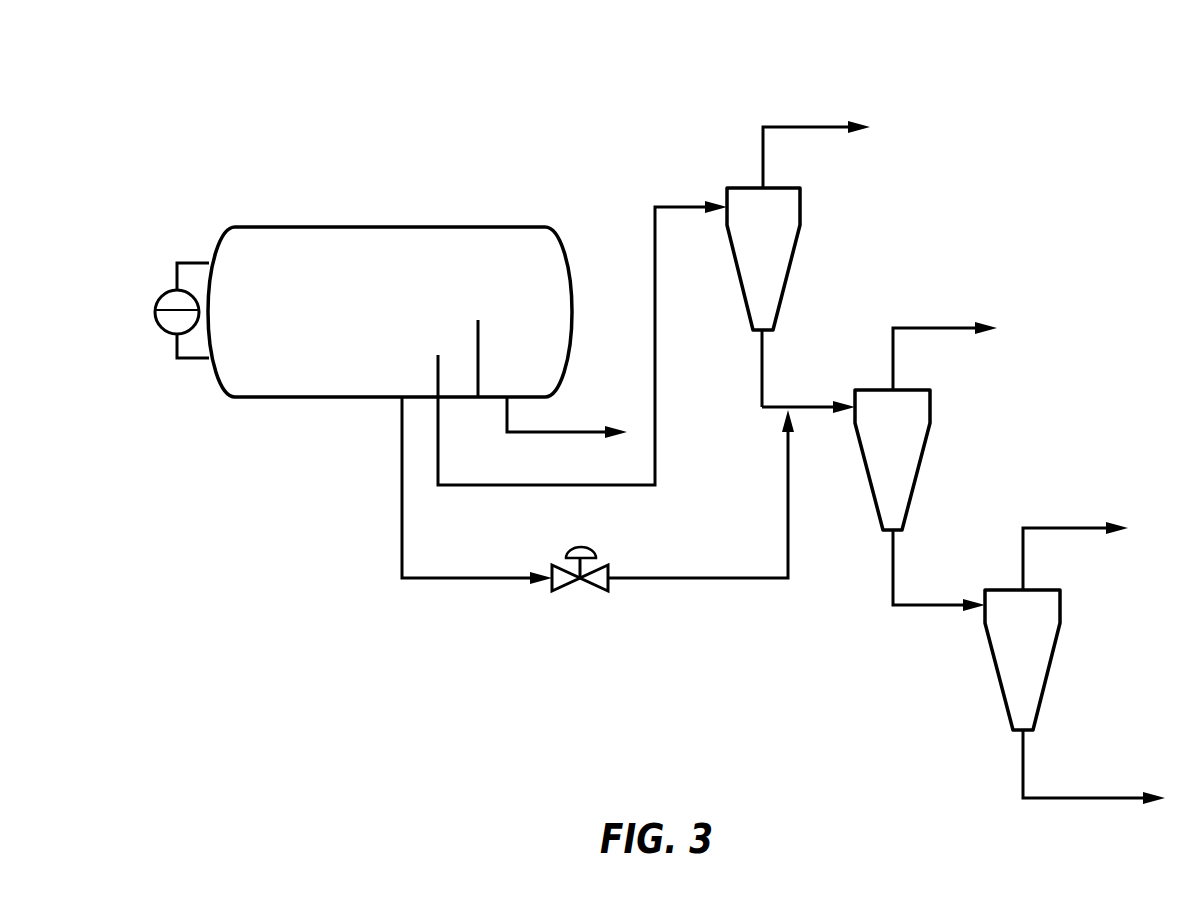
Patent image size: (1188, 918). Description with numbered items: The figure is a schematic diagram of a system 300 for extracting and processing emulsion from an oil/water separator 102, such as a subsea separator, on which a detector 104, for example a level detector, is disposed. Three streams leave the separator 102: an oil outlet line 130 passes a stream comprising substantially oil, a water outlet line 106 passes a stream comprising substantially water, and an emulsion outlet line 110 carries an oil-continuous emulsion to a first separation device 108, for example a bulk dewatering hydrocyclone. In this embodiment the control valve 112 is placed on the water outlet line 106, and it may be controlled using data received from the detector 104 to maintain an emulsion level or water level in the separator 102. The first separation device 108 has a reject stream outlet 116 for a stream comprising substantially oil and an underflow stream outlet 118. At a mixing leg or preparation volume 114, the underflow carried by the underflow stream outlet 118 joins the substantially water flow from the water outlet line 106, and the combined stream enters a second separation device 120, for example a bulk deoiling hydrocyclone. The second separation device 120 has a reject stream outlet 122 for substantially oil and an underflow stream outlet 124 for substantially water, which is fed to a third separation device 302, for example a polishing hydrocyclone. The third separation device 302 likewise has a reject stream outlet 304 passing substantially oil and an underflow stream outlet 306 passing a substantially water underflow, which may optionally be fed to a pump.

The system 300 is at (210, 70).
The oil/water separator 102 is at (307, 226).
The detector 104 is at (158, 300).
The water outlet line 106 is at (399, 493).
The first separation device 108 is at (791, 258).
The emulsion outlet line 110 is at (686, 206).
The control valve 112 is at (594, 553).
The mixing leg or preparation volume 114 is at (818, 402).
The reject stream outlet 116 is at (813, 125).
The underflow stream outlet 118 is at (758, 378).
The second separation device 120 is at (924, 458).
The reject stream outlet 122 is at (943, 326).
The underflow stream outlet 124 is at (888, 577).
The oil outlet line 130 is at (525, 434).
The third separation device 302 is at (1053, 658).
The reject stream outlet 304 is at (1072, 526).
The underflow stream outlet 306 is at (1058, 802).